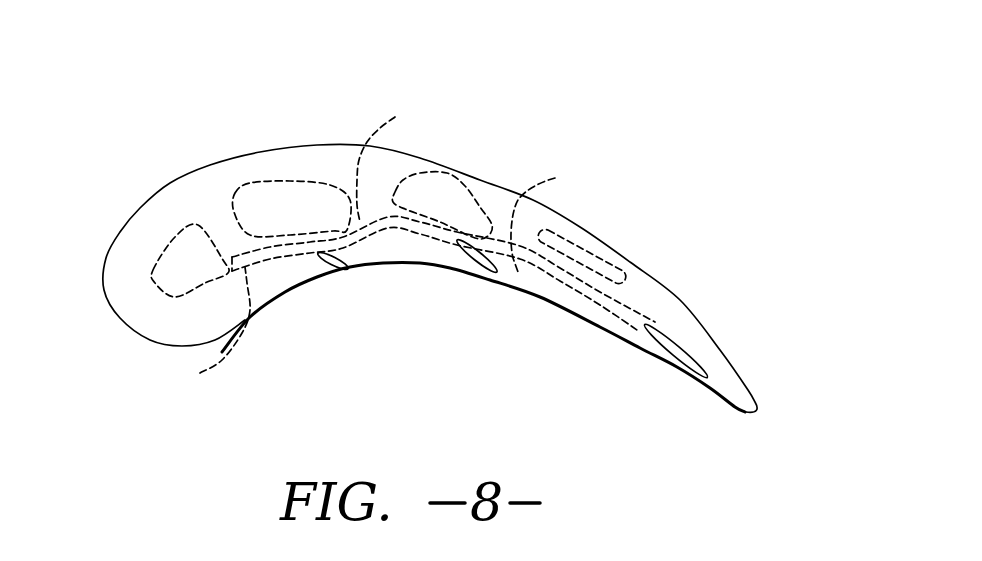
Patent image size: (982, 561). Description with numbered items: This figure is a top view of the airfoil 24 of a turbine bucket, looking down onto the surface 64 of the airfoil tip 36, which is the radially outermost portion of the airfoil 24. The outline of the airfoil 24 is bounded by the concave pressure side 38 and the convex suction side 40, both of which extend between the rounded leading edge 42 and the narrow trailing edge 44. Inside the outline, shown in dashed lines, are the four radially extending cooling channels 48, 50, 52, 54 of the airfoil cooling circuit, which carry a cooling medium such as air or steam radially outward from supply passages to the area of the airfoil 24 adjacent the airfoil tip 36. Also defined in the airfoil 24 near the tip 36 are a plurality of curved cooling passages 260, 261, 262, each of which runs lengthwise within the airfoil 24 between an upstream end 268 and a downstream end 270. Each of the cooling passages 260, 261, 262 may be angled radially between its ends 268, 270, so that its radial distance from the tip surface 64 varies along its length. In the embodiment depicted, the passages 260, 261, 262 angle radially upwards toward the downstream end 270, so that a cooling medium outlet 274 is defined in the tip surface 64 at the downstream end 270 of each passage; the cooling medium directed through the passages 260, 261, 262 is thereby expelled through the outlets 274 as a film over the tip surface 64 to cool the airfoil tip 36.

The airfoil 24 is at (160, 84).
The airfoil tip 36 is at (443, 156).
The pressure side 38 is at (390, 265).
The suction side 40 is at (323, 143).
The leading edge 42 is at (122, 318).
The trailing edge 44 is at (767, 410).
The cooling channel 48 is at (206, 274).
The cooling channel 50 is at (306, 220).
The cooling channel 52 is at (436, 205).
The cooling channel 54 is at (587, 243).
The tip surface 64 is at (185, 193).
The curved cooling passage 260 is at (270, 262).
The curved cooling passage 261 is at (415, 230).
The curved cooling passage 262 is at (583, 292).
The upstream end 268 is at (372, 243).
The downstream end 270 is at (312, 267).
The cooling medium outlet 274 is at (347, 273).